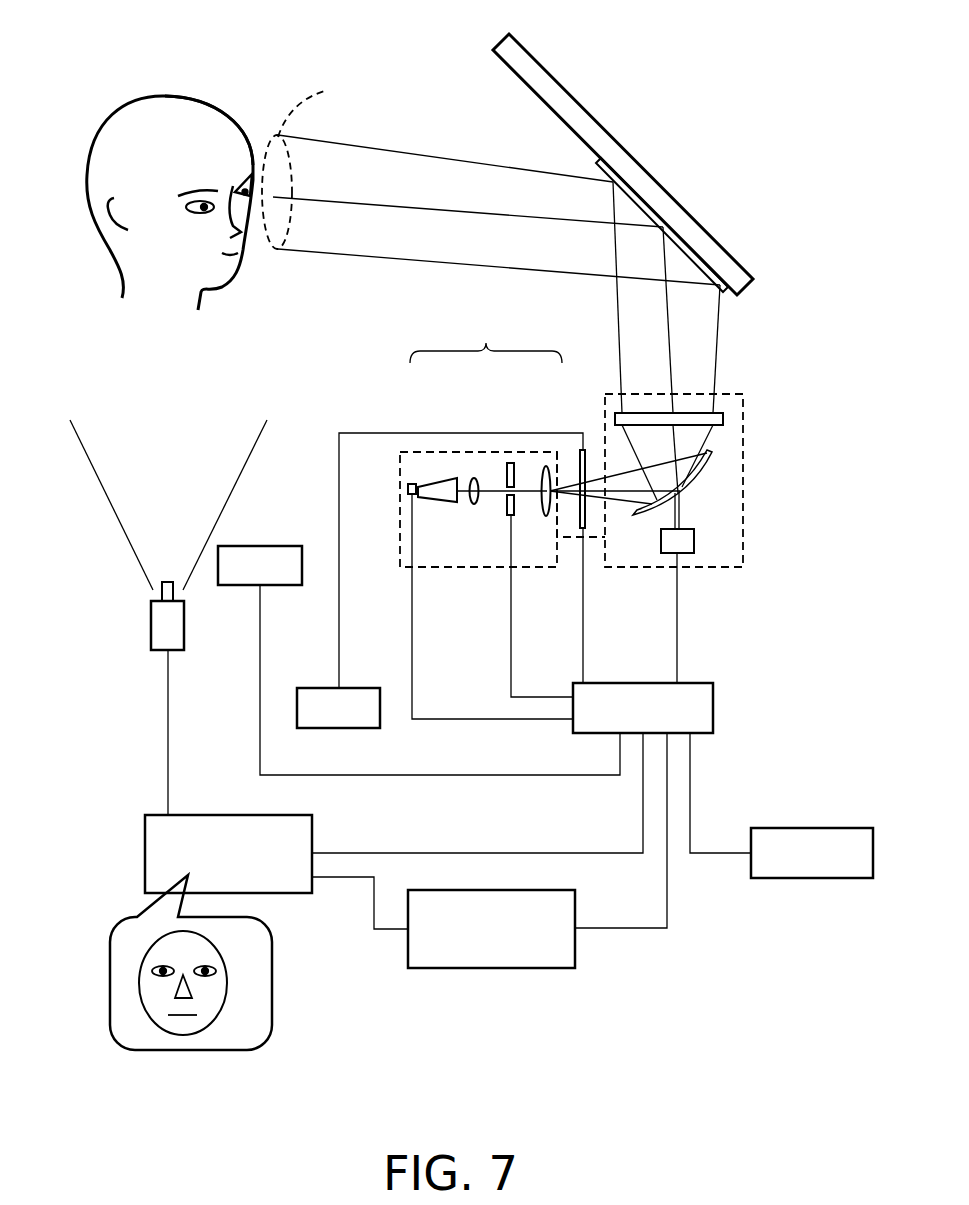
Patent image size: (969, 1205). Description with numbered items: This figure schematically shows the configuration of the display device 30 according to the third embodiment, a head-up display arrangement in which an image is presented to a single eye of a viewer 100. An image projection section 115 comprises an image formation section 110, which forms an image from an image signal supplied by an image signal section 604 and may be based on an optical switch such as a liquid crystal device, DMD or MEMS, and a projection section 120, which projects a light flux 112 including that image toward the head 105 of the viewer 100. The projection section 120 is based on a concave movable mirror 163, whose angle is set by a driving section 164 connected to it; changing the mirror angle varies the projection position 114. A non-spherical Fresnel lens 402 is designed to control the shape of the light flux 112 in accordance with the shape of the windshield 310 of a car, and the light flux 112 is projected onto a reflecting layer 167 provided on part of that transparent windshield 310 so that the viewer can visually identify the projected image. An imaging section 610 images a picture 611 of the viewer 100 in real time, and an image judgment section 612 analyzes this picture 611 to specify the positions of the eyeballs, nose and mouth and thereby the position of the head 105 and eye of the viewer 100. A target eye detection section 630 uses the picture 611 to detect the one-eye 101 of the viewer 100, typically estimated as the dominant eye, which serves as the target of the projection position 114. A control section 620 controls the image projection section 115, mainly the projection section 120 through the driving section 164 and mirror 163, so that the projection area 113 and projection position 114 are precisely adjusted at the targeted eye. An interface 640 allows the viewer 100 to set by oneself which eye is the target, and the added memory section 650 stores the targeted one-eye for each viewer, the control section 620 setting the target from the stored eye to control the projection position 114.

The display device 30 is at (820, 100).
The viewer 100 is at (133, 133).
The head 105 is at (212, 127).
The one-eye 101 is at (238, 192).
The light flux 112 is at (477, 162).
The projection area 113 is at (318, 97).
The projection position 114 is at (282, 205).
The image projection section 115 is at (486, 336).
The projection section 120 is at (437, 452).
The image formation section 110 is at (583, 450).
The windshield 310 is at (575, 115).
The reflecting layer 167 is at (708, 266).
The non-spherical Fresnel lens 402 is at (723, 419).
The concave movable mirror 163 is at (695, 483).
The driving section 164 is at (694, 540).
The image signal section 604 is at (353, 688).
The imaging section 610 is at (150, 627).
The picture 611 is at (110, 982).
The image judgment section 612 is at (145, 838).
The control section 620 is at (713, 708).
The target eye detection section 630 is at (533, 968).
The interface 640 is at (275, 546).
The memory section 650 is at (832, 828).